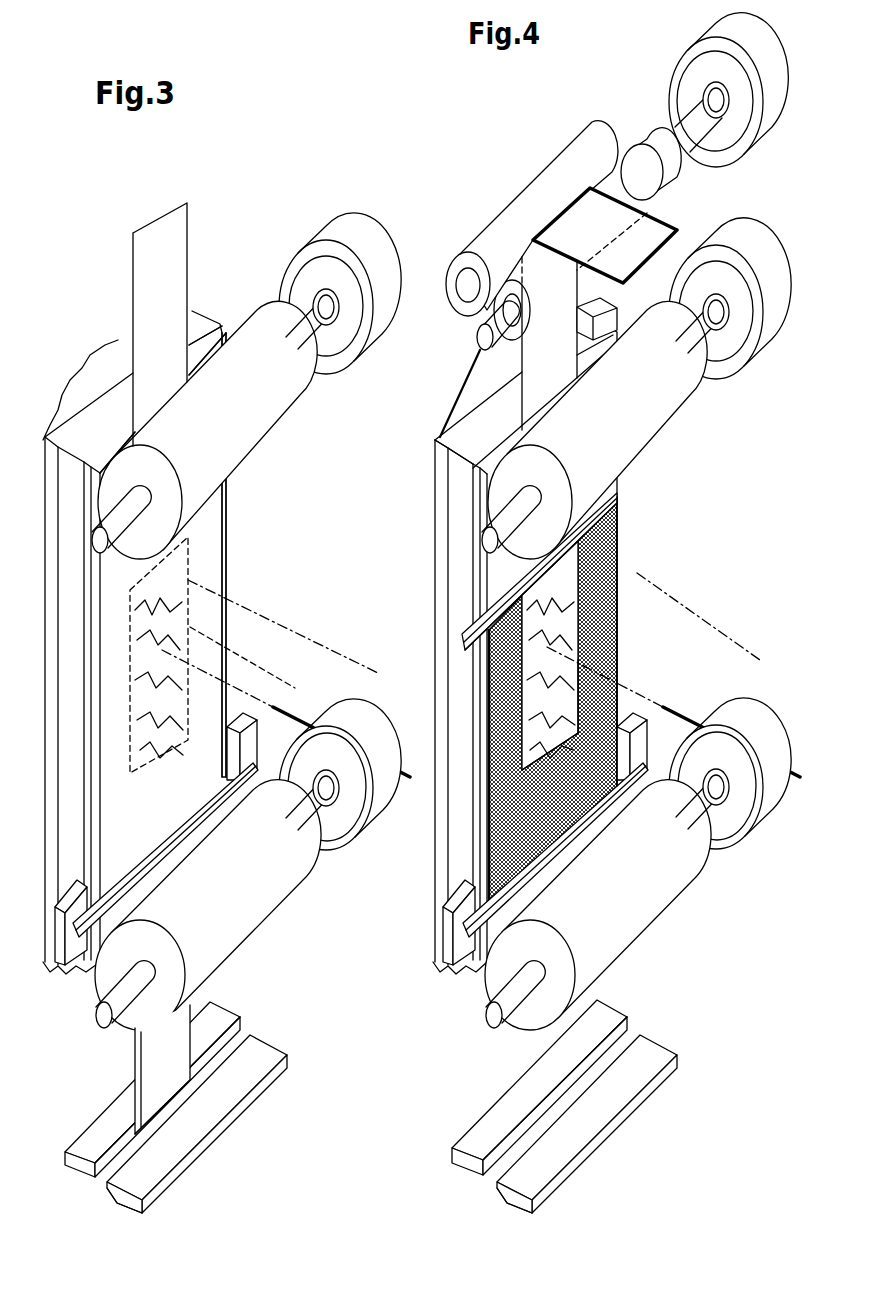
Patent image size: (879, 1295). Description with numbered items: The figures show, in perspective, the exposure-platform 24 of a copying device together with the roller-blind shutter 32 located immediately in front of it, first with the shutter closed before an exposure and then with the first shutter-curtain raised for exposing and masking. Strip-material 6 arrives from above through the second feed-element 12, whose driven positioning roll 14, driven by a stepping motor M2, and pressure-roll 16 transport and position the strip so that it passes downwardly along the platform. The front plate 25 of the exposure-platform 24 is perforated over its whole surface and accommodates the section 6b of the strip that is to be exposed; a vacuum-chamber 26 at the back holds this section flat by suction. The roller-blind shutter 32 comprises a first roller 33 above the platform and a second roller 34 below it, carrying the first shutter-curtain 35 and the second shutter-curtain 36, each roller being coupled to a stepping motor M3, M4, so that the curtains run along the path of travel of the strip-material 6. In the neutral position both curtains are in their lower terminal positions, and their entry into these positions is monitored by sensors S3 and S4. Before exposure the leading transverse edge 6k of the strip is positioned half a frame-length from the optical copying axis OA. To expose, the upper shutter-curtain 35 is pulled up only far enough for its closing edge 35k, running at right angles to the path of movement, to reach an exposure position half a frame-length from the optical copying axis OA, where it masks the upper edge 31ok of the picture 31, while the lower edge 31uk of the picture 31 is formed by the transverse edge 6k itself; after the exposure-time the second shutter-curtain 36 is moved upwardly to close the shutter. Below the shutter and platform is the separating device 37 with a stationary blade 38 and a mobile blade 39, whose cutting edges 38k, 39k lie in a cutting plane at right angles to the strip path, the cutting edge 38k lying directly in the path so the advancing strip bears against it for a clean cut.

In FIG. 3, the strip-material 6 is at (176, 285).
In FIG. 4, the strip-material 6 is at (650, 233).
In FIG. 4, the section of the strip-material 6b is at (610, 637).
In FIG. 3, the leading transverse edge 6k is at (157, 1112).
In FIG. 4, the leading transverse edge 6k is at (612, 677).
In FIG. 4, the second feed-element 12 is at (618, 180).
In FIG. 4, the positioning roll 14 is at (627, 163).
In FIG. 4, the pressure-roll 16 is at (517, 202).
In FIG. 3, the exposure-platform 24 is at (73, 318).
In FIG. 4, the exposure-platform 24 is at (433, 495).
In FIG. 3, the front plate 25 is at (222, 331).
In FIG. 4, the front plate 25 is at (490, 663).
In FIG. 3, the vacuum-chamber 26 is at (92, 372).
In FIG. 4, the vacuum-chamber 26 is at (448, 462).
In FIG. 3, the picture 31 is at (183, 603).
In FIG. 4, the picture 31 is at (580, 612).
In FIG. 4, the upper edge of the picture 31ok is at (556, 578).
In FIG. 4, the lower edge of the picture 31uk is at (493, 707).
In FIG. 3, the roller-blind shutter 32 is at (344, 530).
In FIG. 4, the roller-blind shutter 32 is at (730, 601).
In FIG. 3, the first roller 33 is at (288, 410).
In FIG. 4, the first roller 33 is at (670, 415).
In FIG. 3, the second roller 34 is at (270, 908).
In FIG. 4, the second roller 34 is at (660, 908).
In FIG. 3, the first shutter-curtain 35 is at (210, 523).
In FIG. 4, the first shutter-curtain 35 is at (498, 580).
In FIG. 4, the closing edge of the first shutter-curtain 35k is at (610, 552).
In FIG. 3, the second shutter-curtain 36 is at (173, 860).
In FIG. 4, the second shutter-curtain 36 is at (567, 853).
In FIG. 3, the separating device 37 is at (204, 1094).
In FIG. 4, the separating device 37 is at (592, 1095).
In FIG. 3, the stationary blade 38 is at (220, 1013).
In FIG. 4, the stationary blade 38 is at (600, 1013).
In FIG. 3, the cutting edge of the stationary blade 38k is at (228, 1042).
In FIG. 4, the cutting edge of the stationary blade 38k is at (620, 1040).
In FIG. 3, the mobile blade 39 is at (213, 1120).
In FIG. 4, the mobile blade 39 is at (578, 1137).
In FIG. 3, the cutting edge of the mobile blade 39k is at (143, 1150).
In FIG. 4, the cutting edge of the mobile blade 39k is at (527, 1153).
In FIG. 4, the stepping motor M2 is at (728, 140).
In FIG. 3, the stepping motor M3 is at (375, 330).
In FIG. 4, the stepping motor M3 is at (737, 352).
In FIG. 3, the stepping motor M4 is at (386, 792).
In FIG. 4, the stepping motor M4 is at (730, 838).
In FIG. 3, the sensor S3 is at (76, 967).
In FIG. 4, the sensor S3 is at (455, 953).
In FIG. 3, the sensor S4 is at (255, 727).
In FIG. 4, the sensor S4 is at (643, 747).
In FIG. 3, the optical copying axis OA is at (270, 643).
In FIG. 4, the optical copying axis OA is at (653, 640).